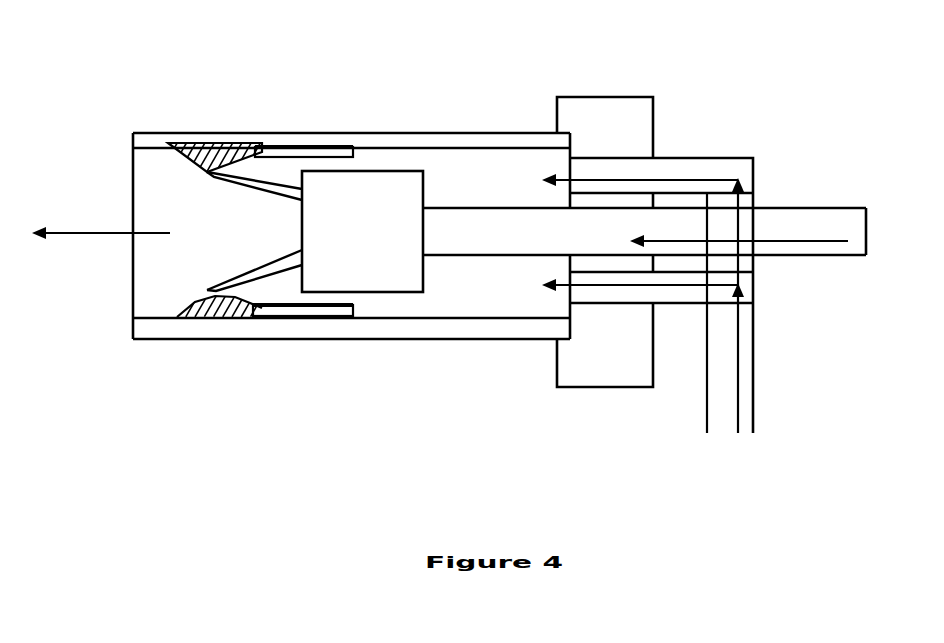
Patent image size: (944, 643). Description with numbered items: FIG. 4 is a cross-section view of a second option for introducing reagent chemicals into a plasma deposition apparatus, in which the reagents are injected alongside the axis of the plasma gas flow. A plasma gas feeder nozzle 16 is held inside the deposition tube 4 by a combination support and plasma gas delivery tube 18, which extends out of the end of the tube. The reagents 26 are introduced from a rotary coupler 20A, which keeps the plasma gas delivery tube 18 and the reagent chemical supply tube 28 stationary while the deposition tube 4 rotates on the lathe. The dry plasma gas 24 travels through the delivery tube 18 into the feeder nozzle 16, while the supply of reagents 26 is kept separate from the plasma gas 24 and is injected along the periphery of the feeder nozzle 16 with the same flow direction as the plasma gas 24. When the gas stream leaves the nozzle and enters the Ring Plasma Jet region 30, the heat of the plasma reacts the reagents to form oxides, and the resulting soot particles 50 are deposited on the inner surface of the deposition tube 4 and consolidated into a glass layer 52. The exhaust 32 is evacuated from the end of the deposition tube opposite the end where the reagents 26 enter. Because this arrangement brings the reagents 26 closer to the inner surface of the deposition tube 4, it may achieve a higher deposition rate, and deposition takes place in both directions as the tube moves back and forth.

The deposition tube 4 is at (351, 171).
The soot particles 50 is at (325, 184).
The glass layer 52 is at (360, 206).
The Ring Plasma Jet region 30 is at (337, 303).
The plasma gas feeder nozzle 16 is at (362, 231).
The exhaust 32 is at (101, 226).
The rotary coupler 20A is at (656, 95).
The reagent chemical supply tube 28 is at (661, 288).
The combination support and plasma gas delivery tube 18 is at (644, 222).
The plasma gas 24 is at (739, 235).
The reagent chemicals 26 is at (668, 300).